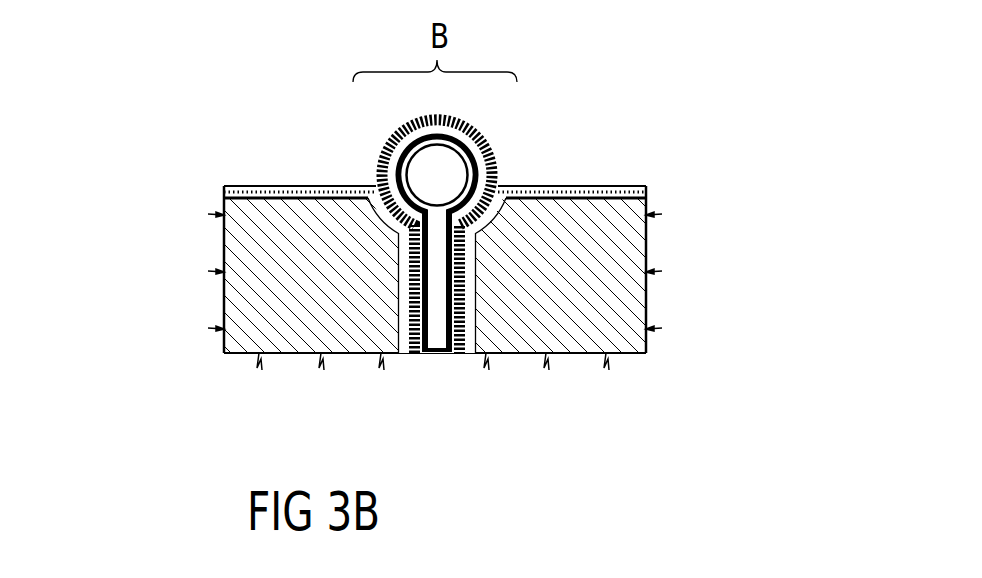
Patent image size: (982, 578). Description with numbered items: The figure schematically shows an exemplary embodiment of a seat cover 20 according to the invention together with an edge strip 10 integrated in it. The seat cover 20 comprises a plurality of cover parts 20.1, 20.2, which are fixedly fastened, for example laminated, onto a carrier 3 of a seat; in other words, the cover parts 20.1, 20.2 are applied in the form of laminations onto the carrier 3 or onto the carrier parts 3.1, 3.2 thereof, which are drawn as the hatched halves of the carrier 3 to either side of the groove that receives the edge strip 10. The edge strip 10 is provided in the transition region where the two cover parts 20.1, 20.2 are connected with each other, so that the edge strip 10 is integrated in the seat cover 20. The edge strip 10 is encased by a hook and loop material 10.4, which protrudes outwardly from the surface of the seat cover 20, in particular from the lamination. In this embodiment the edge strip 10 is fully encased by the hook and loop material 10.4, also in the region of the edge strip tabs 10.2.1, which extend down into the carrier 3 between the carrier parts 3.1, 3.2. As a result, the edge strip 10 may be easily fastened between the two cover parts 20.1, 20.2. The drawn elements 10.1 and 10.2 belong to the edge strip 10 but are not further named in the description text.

The carrier 3 is at (409, 278).
The carrier part 3.1 is at (646, 312).
The carrier part 3.2 is at (224, 315).
The edge strip 10 is at (423, 267).
The fiber core 10.1 is at (446, 158).
The fiber cladding 10.2 is at (490, 191).
The edge strip tabs 10.2.1 is at (444, 349).
The hook and loop material 10.4 is at (372, 172).
The seat cover 20 is at (448, 194).
The cover part 20.1 is at (646, 196).
The cover part 20.2 is at (224, 195).